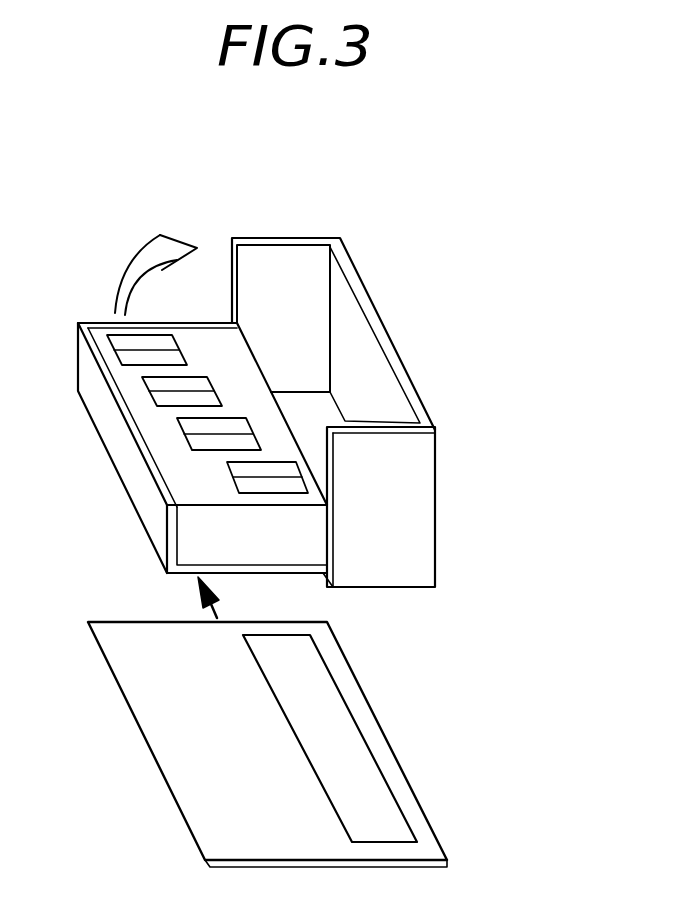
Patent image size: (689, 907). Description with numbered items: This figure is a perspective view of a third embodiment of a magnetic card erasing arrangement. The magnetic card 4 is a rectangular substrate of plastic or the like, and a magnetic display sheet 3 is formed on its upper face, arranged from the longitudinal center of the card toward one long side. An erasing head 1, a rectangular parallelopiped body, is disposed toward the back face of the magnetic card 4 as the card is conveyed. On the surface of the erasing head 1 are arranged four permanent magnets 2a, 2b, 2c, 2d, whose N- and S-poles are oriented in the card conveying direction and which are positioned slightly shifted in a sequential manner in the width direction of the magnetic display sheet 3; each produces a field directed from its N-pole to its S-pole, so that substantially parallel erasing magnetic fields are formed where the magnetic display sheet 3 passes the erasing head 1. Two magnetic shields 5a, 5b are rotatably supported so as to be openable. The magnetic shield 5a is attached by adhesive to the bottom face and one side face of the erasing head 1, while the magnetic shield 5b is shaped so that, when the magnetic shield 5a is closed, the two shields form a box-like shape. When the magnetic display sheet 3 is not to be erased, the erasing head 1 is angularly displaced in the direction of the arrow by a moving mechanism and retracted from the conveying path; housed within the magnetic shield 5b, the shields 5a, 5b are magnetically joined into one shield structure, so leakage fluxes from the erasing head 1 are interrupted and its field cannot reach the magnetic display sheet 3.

The erasing head 1 is at (298, 411).
The permanent magnet 2a is at (166, 351).
The permanent magnet 2b is at (202, 392).
The permanent magnet 2c is at (235, 434).
The permanent magnet 2d is at (249, 478).
The magnetic display sheet 3 is at (328, 740).
The magnetic card 4 is at (249, 744).
The magnetic shield 5a is at (123, 450).
The magnetic shield 5b is at (400, 353).